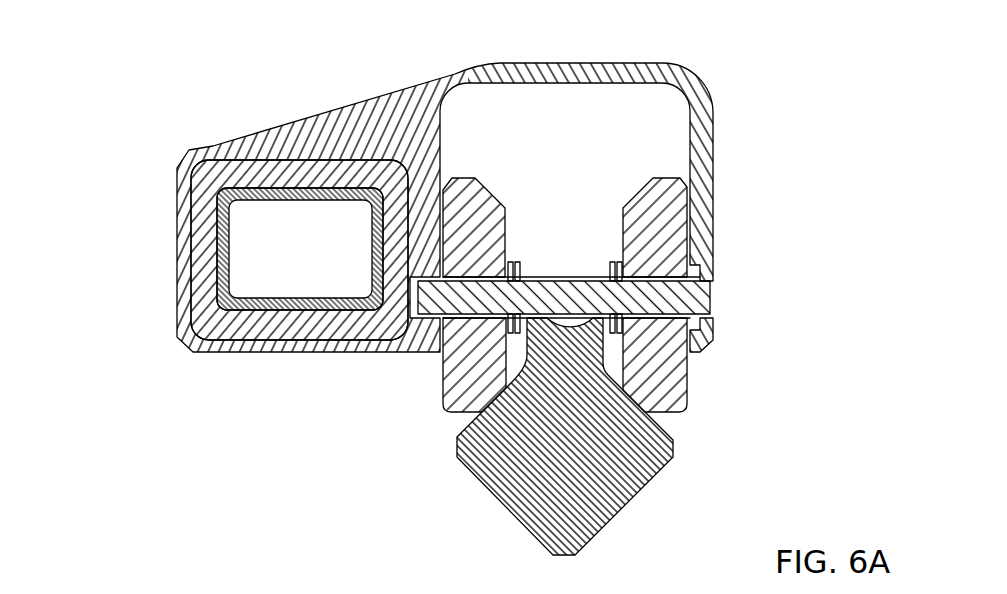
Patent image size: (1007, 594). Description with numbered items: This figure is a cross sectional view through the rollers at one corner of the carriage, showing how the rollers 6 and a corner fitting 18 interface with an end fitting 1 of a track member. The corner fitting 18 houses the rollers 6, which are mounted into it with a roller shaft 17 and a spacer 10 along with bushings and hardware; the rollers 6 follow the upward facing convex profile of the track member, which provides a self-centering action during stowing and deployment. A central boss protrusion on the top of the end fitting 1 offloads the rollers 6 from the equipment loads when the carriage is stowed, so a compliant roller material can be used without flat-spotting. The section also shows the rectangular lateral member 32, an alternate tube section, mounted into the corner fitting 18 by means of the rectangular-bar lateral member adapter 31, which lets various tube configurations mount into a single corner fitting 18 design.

The end fitting 1 is at (598, 440).
The roller 6 is at (582, 330).
The spacer 10 is at (564, 173).
The roller shaft 17 is at (767, 276).
The corner fitting 18 is at (500, 207).
The lateral member adapter, rectangular bar 31 is at (225, 250).
The lateral member, rectangular 32 is at (213, 284).